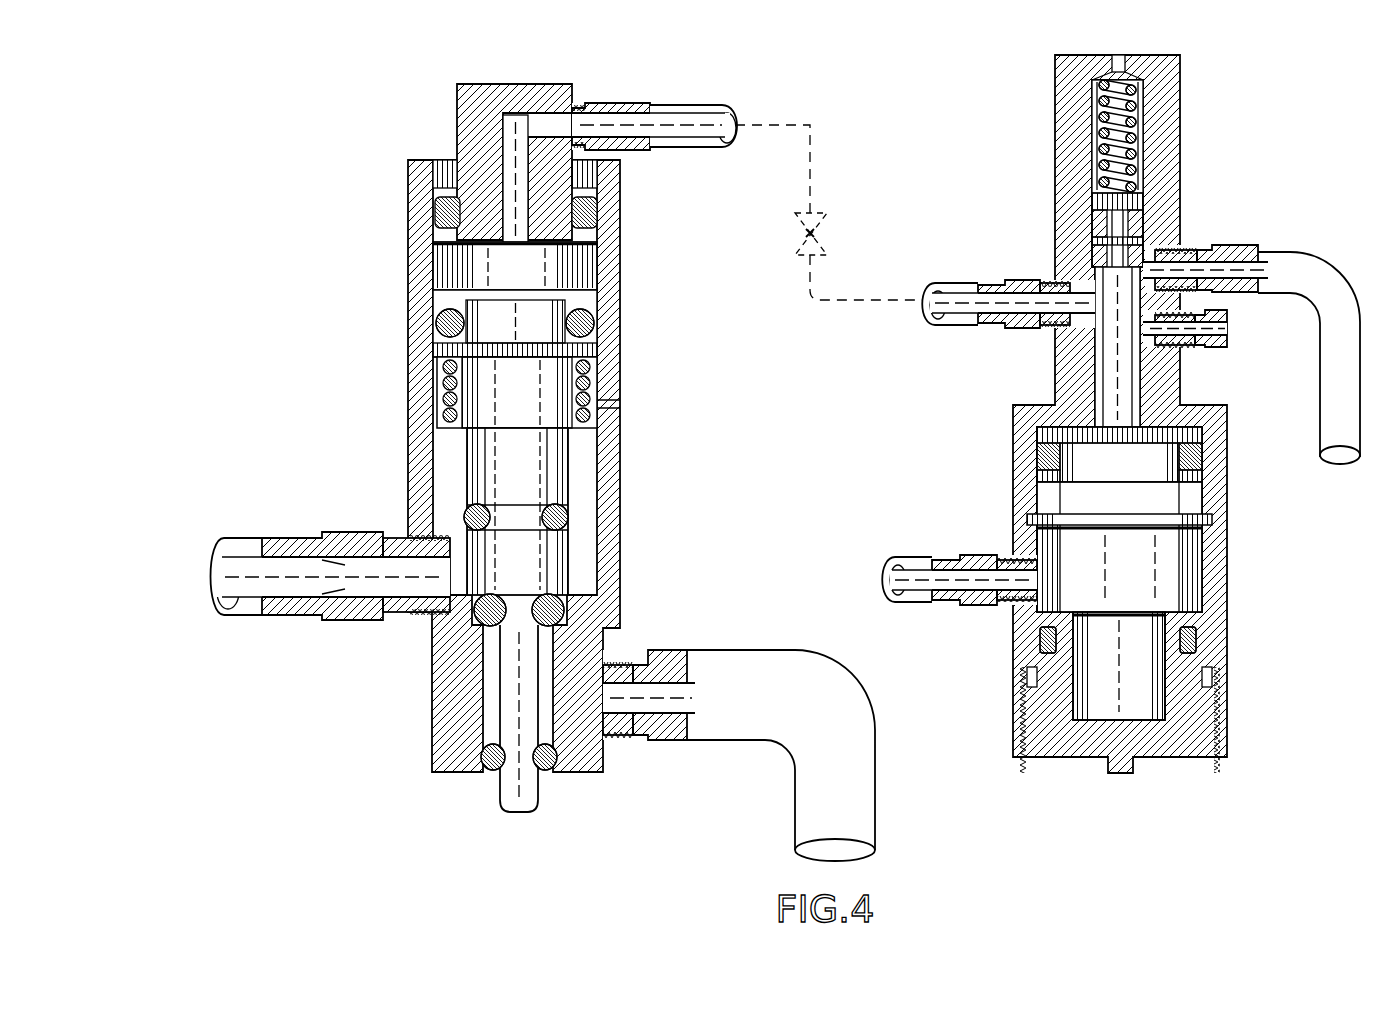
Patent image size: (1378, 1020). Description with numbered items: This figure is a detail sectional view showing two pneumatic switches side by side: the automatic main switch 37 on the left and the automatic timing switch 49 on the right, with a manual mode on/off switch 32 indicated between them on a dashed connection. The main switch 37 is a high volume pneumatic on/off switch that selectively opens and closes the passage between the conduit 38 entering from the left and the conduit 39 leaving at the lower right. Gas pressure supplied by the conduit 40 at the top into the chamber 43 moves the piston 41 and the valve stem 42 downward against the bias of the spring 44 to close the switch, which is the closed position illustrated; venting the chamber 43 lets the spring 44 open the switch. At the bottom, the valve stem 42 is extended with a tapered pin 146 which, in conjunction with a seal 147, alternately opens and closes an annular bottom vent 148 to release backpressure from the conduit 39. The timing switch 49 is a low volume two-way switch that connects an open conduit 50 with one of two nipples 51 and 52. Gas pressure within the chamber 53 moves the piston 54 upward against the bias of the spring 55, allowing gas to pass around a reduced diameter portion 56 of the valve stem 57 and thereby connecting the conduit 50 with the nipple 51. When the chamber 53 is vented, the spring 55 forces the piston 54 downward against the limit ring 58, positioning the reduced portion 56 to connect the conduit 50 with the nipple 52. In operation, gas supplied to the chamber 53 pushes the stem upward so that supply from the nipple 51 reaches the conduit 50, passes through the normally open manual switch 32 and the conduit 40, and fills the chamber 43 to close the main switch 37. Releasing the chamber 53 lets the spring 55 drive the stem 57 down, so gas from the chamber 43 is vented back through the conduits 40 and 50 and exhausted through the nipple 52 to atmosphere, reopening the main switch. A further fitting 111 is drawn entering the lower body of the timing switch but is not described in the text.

The automatic main switch 37 is at (336, 207).
The conduit 38 is at (230, 565).
The conduit 39 is at (800, 782).
The conduit 40 is at (680, 117).
The piston 41 is at (440, 305).
The valve stem 42 is at (547, 486).
The chamber 43 is at (578, 268).
The spring 44 is at (440, 400).
The manual mode on/off switch 32 is at (814, 227).
The automatic timing switch 49 is at (1160, 142).
The conduit 50 is at (960, 320).
The nipple 51 is at (1225, 250).
The nipple 52 is at (1213, 330).
The chamber 53 is at (1119, 601).
The piston 54 is at (1040, 472).
The spring 55 is at (1100, 120).
The reduced diameter portion 56 is at (1113, 266).
The valve stem 57 is at (1110, 400).
The limit ring 58 is at (1182, 528).
The supply fitting and tube 111 is at (912, 566).
The tapered pin 146 is at (540, 812).
The seal 147 is at (492, 774).
The annular bottom vent 148 is at (542, 774).